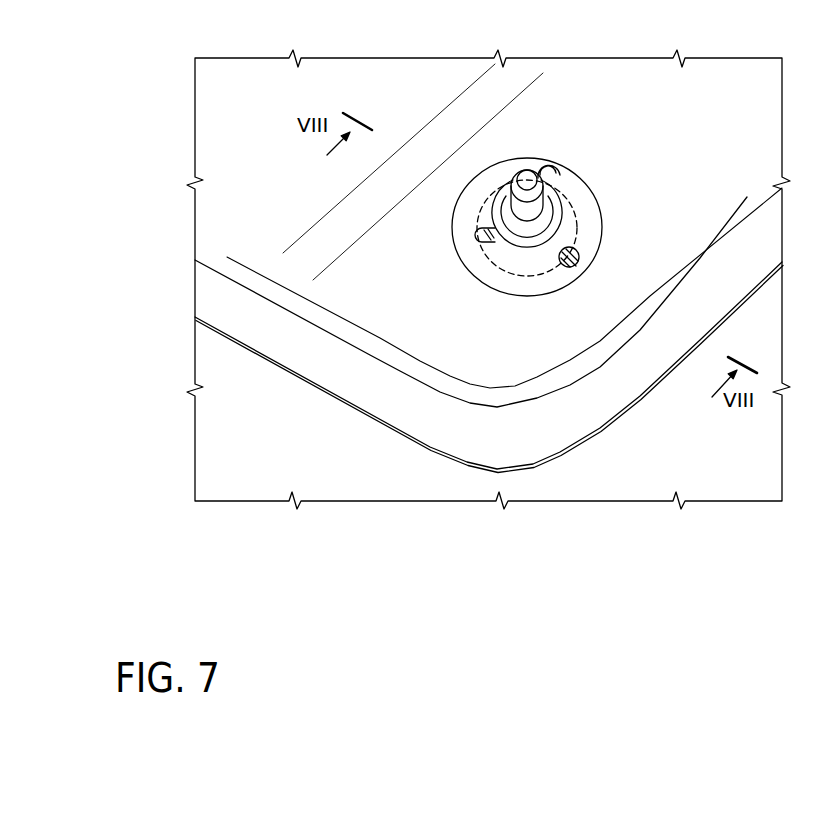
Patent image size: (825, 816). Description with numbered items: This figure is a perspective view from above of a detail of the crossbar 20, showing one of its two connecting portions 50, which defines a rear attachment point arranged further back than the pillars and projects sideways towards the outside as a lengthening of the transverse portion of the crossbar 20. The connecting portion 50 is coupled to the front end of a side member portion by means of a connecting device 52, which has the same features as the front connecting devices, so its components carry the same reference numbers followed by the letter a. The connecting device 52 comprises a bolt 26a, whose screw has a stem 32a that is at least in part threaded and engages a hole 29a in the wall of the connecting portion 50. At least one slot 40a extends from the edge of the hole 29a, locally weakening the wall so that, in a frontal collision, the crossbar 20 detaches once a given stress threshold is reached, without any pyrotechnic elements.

The crossbar 20 is at (300, 384).
The bolt 26a is at (562, 187).
The hole 29a is at (520, 250).
The stem 32a is at (507, 176).
The slot 40a is at (565, 172).
The connecting portion 50 is at (580, 343).
The connecting device 52 is at (524, 156).